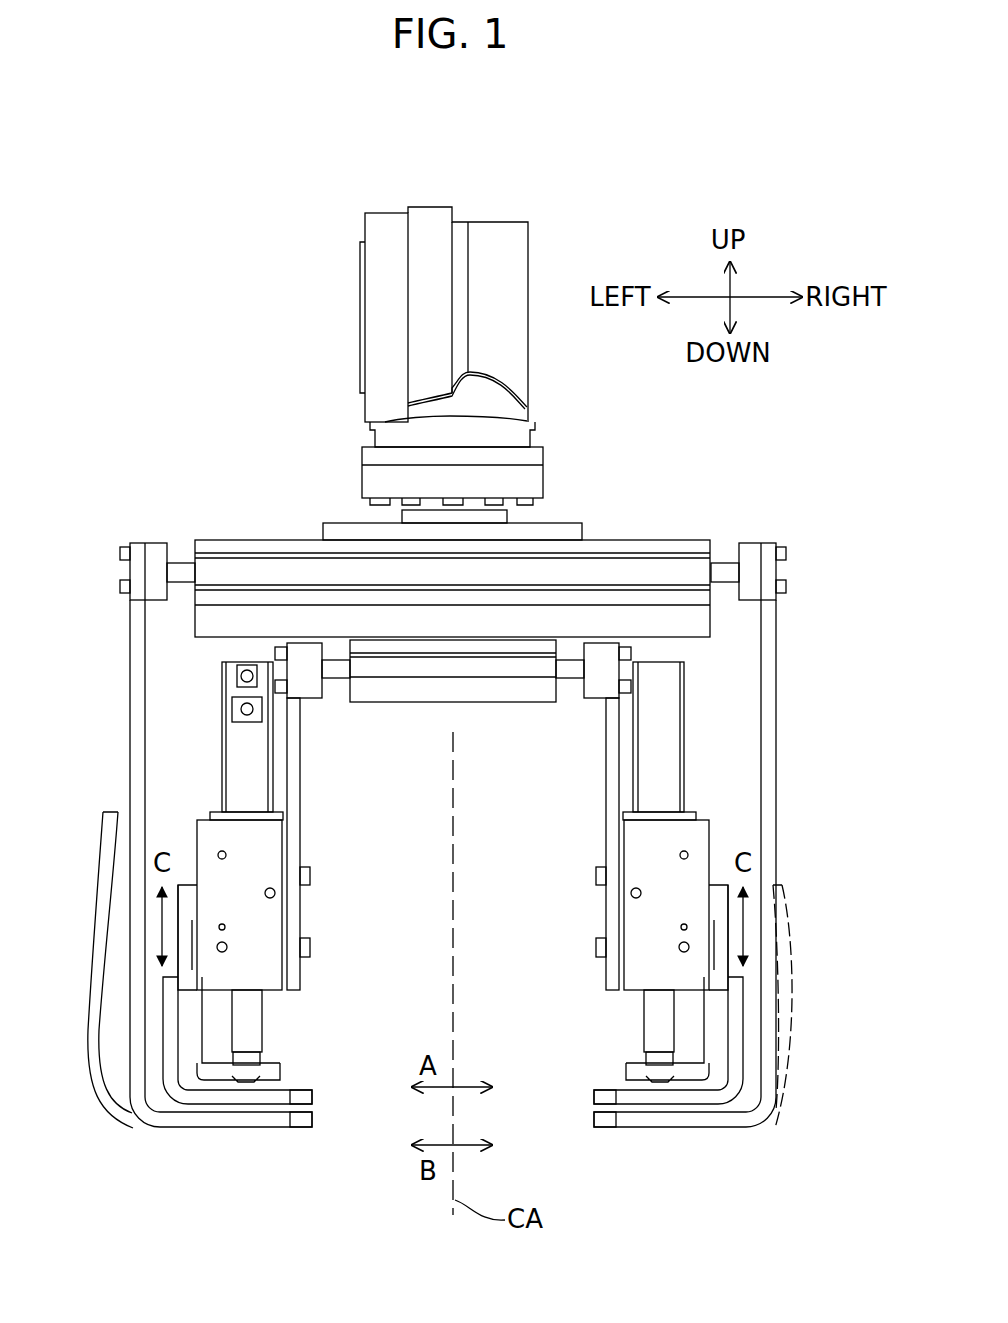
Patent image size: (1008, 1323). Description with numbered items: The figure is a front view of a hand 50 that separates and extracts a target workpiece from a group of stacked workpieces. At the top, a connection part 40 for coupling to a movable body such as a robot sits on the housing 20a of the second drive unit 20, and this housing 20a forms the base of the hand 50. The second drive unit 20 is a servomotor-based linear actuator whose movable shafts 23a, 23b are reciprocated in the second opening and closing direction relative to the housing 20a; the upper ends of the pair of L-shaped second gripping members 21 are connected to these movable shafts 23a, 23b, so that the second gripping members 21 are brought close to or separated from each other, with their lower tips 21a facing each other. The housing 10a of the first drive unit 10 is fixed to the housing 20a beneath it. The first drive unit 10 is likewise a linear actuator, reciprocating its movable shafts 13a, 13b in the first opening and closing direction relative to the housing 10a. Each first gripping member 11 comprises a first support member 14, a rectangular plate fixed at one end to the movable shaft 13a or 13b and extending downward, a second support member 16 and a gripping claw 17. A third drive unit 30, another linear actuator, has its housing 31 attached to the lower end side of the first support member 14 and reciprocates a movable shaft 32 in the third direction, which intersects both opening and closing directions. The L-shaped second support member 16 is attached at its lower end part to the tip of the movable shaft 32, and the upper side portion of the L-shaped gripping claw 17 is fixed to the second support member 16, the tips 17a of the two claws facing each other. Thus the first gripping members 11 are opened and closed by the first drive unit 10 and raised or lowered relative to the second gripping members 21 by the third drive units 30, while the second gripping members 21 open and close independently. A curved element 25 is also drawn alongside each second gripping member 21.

The hand 50 is at (182, 395).
The connection part 40 is at (548, 518).
The second drive unit 20 is at (670, 532).
The housing 20a is at (612, 546).
The movable shaft 23a is at (183, 560).
The movable shaft 23b is at (723, 560).
The first drive unit 10 is at (500, 720).
The housing 10a is at (403, 704).
The movable shaft 13a is at (330, 698).
The movable shaft 13b is at (576, 698).
The first support member 14 is at (310, 846).
The third drive unit 30 is at (207, 815).
The housing 31 is at (208, 837).
The first gripping member 11 is at (332, 940).
The movable shaft 32 is at (264, 1017).
The second support member 16 is at (280, 1072).
The gripping claw 17 is at (250, 1106).
The tip 17a is at (313, 1097).
The second gripping member 21 is at (183, 1130).
The tip 21a is at (313, 1120).
The curved guide finger 25 is at (95, 968).